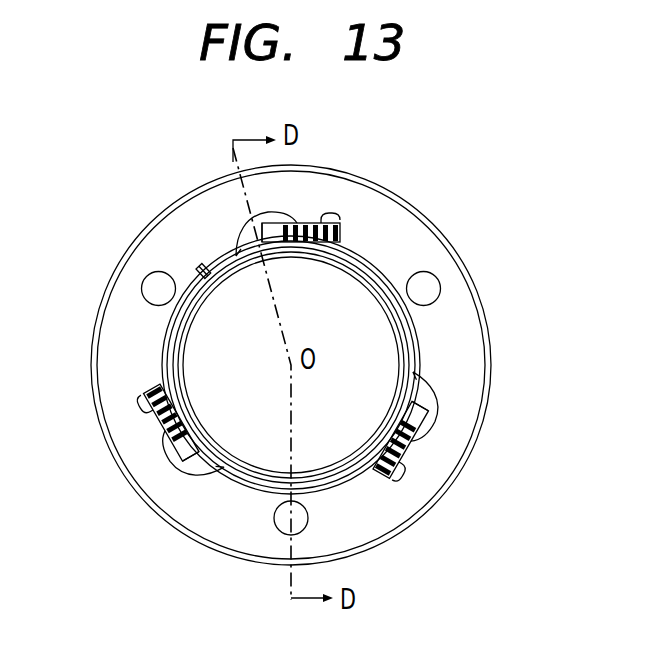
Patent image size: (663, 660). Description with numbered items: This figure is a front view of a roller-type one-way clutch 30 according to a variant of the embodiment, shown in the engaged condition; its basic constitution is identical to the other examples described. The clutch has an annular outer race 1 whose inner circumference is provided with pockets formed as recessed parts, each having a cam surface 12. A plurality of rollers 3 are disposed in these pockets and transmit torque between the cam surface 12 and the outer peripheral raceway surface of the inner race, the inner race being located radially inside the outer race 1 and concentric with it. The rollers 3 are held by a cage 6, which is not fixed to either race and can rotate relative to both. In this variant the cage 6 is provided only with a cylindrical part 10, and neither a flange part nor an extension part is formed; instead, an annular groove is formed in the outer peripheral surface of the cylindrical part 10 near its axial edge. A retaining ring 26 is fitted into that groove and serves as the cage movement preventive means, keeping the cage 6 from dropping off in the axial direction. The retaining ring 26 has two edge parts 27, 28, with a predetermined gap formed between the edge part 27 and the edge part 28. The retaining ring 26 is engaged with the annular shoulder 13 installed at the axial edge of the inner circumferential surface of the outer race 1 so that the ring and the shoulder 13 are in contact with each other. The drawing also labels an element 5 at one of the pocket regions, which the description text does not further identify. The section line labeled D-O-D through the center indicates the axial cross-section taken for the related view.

The outer race 1 is at (113, 303).
The roller 3 is at (193, 467).
The pawl block 5 is at (313, 222).
The cage 6 is at (232, 480).
The cylindrical part 10 is at (195, 311).
The cam surface 12 is at (243, 218).
The shoulder 13 is at (160, 353).
The retaining ring 26 is at (417, 342).
The edge part 27 is at (193, 273).
The edge part 28 is at (205, 263).
The roller-type one-way clutch 30 is at (490, 208).